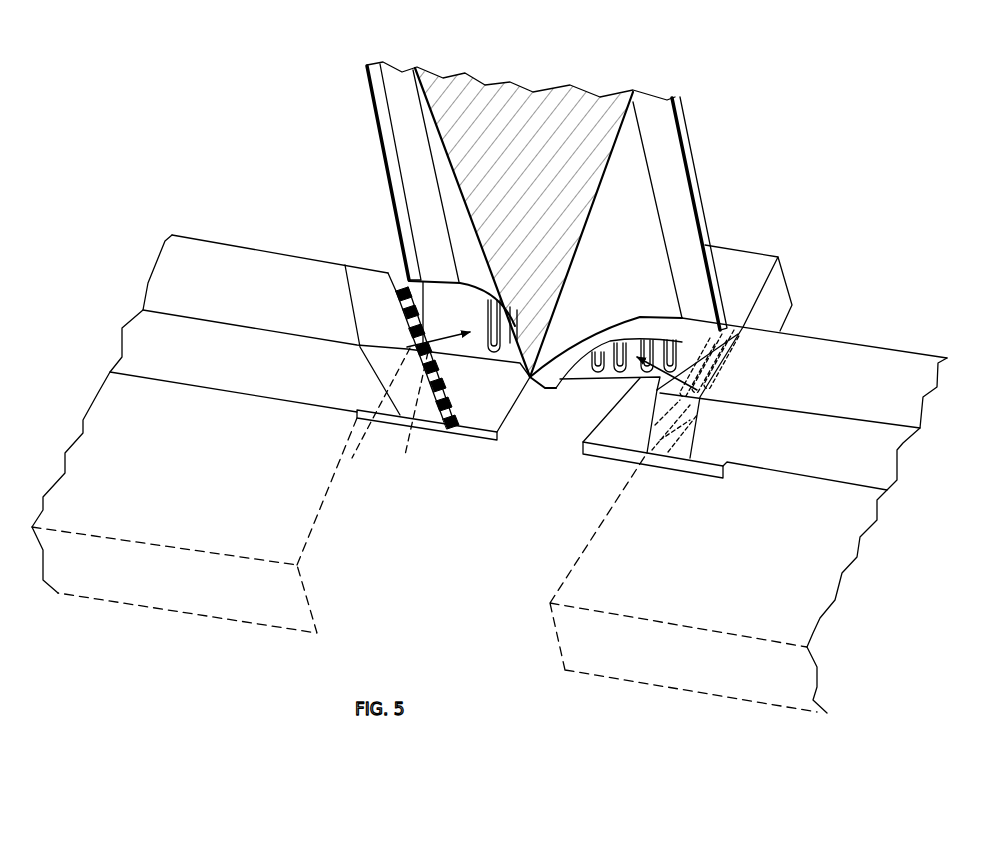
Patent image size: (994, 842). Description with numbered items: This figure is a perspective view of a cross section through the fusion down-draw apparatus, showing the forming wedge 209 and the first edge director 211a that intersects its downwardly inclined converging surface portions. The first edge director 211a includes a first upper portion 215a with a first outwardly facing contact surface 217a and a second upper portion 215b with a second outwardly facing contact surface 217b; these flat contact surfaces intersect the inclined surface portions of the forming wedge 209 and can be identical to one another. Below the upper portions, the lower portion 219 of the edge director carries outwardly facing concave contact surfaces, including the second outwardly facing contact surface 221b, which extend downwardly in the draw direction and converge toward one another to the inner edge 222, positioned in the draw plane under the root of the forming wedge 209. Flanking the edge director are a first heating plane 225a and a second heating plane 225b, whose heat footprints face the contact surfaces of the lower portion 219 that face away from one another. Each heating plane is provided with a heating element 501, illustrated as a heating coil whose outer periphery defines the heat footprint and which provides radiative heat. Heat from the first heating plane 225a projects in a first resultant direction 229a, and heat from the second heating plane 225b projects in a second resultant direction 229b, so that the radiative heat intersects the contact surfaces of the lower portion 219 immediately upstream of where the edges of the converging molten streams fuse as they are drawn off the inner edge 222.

The forming wedge 209 is at (550, 110).
The first upper portion 215a is at (433, 147).
The second upper portion 215b is at (635, 148).
The first outwardly facing contact surface 217a is at (443, 200).
The second outwardly facing contact surface 217b is at (632, 208).
The first heating plane 225a is at (398, 290).
The second heating plane 225b is at (737, 330).
The first edge director 211a is at (716, 213).
The first resultant direction 229a is at (453, 342).
The second resultant direction 229b is at (660, 350).
The inner edge 222 is at (536, 382).
The lower portion 219 is at (577, 414).
The second outwardly facing contact surface 221b is at (592, 343).
The heating element 501 is at (444, 416).